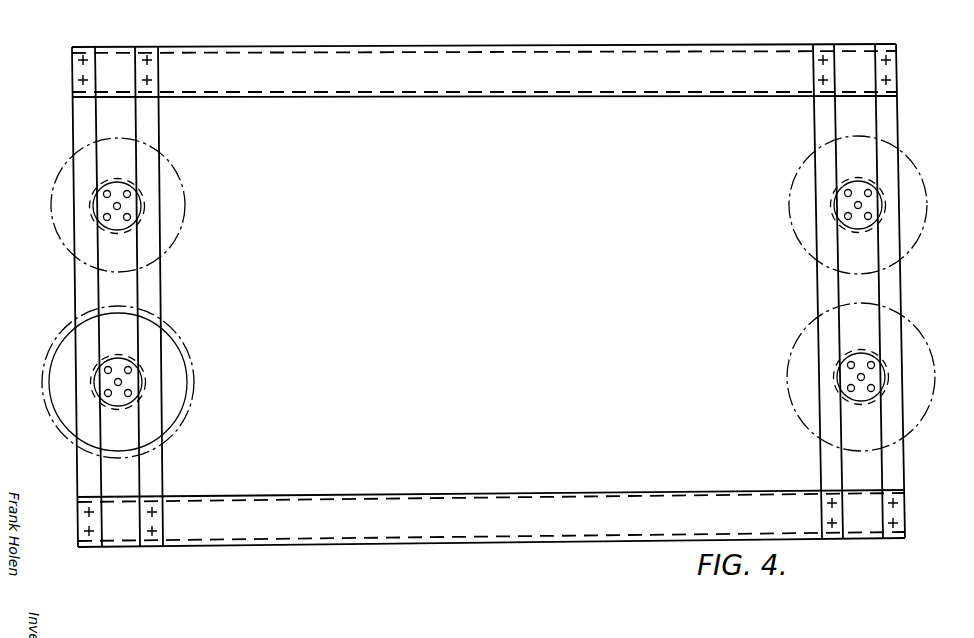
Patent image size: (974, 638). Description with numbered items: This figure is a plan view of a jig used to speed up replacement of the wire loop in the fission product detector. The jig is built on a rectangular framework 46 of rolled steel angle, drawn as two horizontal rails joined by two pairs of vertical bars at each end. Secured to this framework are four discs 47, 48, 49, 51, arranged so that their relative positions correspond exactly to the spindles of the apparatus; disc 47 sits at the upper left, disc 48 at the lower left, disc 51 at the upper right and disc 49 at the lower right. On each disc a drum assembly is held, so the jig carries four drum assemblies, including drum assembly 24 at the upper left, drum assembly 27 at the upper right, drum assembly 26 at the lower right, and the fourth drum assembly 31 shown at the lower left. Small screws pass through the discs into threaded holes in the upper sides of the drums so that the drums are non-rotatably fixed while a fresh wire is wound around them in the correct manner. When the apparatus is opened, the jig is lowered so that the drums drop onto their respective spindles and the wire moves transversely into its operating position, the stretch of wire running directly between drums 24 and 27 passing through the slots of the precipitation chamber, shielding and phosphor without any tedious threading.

The drum assembly 24 is at (185, 203).
The rear wheel 31 is at (185, 370).
The drum assembly 27 is at (800, 203).
The drum assembly 26 is at (800, 385).
The disc 47 is at (117, 190).
The disc 48 is at (118, 364).
The disc 51 is at (858, 186).
The disc 49 is at (861, 358).
The framework 46 is at (665, 506).